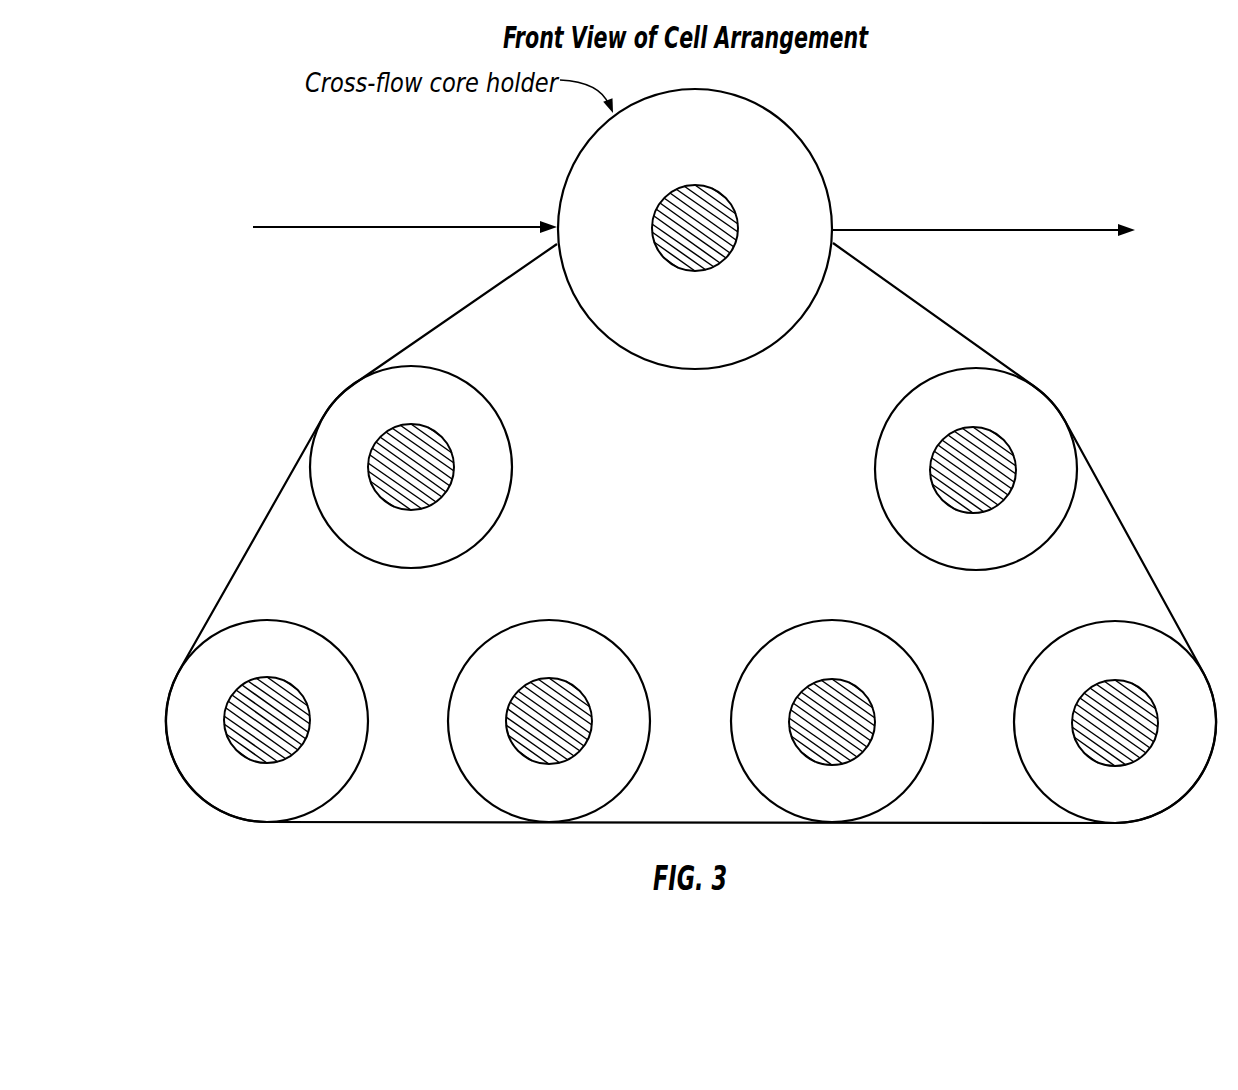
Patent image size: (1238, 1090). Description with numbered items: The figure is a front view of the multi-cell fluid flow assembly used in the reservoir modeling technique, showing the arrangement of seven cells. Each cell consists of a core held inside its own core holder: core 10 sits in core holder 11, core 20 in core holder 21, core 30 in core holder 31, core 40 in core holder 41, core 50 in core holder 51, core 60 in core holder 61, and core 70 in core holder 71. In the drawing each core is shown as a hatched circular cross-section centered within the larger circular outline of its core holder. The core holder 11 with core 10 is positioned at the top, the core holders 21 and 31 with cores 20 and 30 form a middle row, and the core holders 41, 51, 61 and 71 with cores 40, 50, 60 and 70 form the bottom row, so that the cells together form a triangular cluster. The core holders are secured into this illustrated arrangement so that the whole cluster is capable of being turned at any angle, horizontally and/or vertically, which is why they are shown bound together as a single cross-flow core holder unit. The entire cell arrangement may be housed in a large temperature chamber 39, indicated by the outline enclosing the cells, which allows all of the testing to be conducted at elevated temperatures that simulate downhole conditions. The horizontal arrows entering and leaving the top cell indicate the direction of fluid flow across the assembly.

The core 10 is at (682, 207).
The core holder 11 is at (769, 132).
The core 20 is at (402, 441).
The core holder 21 is at (376, 386).
The core 30 is at (980, 444).
The core holder 31 is at (1015, 396).
The temperature chamber 39 is at (925, 311).
The core 40 is at (258, 696).
The core holder 41 is at (212, 651).
The core 50 is at (538, 697).
The core holder 51 is at (498, 653).
The core 60 is at (840, 700).
The core holder 61 is at (877, 651).
The core 70 is at (1122, 703).
The core holder 71 is at (1173, 653).